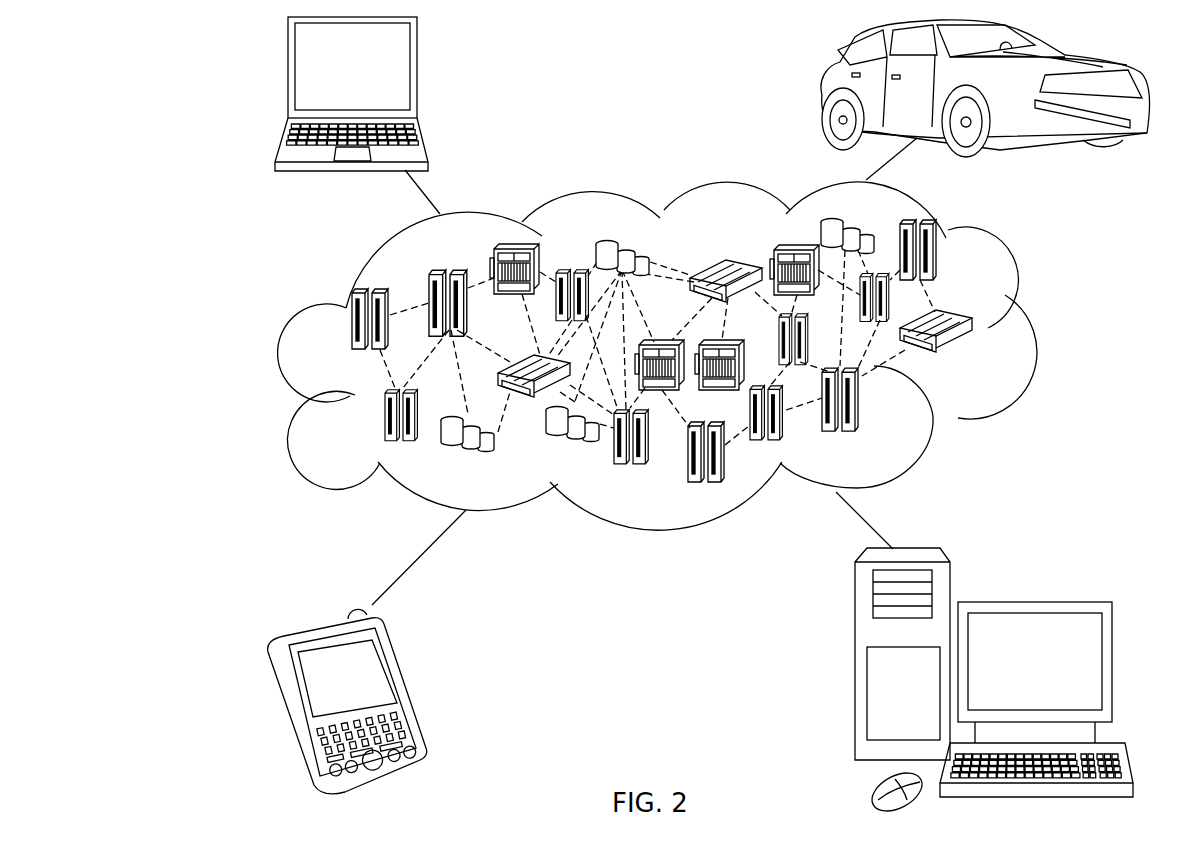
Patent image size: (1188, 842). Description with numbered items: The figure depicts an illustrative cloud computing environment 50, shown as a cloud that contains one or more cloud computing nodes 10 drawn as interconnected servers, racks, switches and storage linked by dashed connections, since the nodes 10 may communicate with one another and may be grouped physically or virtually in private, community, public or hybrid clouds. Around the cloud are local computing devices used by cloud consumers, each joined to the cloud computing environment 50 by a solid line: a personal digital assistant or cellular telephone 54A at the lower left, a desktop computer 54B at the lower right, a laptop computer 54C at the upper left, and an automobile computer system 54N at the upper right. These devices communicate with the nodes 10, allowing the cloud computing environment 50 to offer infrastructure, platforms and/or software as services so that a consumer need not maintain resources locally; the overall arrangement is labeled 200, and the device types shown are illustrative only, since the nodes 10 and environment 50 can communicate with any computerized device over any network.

The cloud computing environment 200 is at (186, 156).
The cloud computing environment 50 is at (1032, 331).
The cloud computing node 10 is at (978, 360).
The personal digital assistant or cellular telephone 54A is at (407, 688).
The desktop computer 54B is at (1032, 602).
The laptop computer 54C is at (417, 75).
The automobile computer system 54N is at (827, 90).